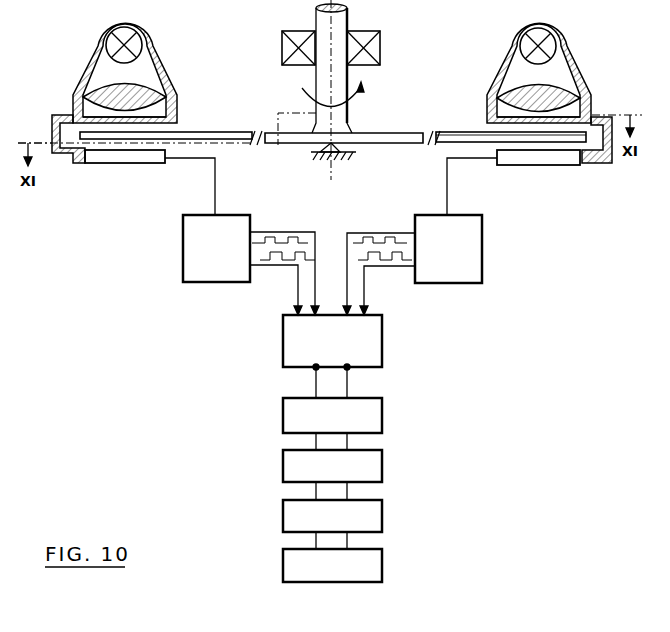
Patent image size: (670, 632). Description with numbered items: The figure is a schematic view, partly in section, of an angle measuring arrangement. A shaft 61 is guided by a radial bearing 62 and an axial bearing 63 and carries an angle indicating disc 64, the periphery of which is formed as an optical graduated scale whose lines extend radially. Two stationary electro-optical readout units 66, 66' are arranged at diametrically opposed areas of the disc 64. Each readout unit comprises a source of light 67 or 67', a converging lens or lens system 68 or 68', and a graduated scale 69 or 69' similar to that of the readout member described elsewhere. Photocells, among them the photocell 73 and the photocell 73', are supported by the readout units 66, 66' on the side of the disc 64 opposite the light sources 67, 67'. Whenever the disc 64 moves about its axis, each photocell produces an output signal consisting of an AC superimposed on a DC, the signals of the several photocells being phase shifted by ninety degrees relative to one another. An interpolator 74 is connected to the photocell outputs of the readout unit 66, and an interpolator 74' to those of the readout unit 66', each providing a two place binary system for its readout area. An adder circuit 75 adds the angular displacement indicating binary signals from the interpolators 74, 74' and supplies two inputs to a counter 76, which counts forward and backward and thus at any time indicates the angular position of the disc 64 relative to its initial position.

The shaft 61 is at (338, 20).
The radial bearing 62 is at (379, 55).
The axial bearing 63 is at (343, 165).
The angle indicating disc 64 is at (400, 132).
The electro-optical readout unit 66 is at (553, 93).
The electro-optical readout unit 66' is at (126, 93).
The source of light 67 is at (517, 46).
The source of light 67' is at (101, 45).
The converging lens 68 is at (520, 93).
The converging lens 68' is at (149, 92).
The graduated scale 69 is at (520, 118).
The graduated scale 69' is at (150, 120).
The photocell 73 is at (513, 182).
The photocell 73' is at (150, 182).
The interpolator 74 is at (412, 265).
The interpolator 74' is at (251, 265).
The adder circuit 75 is at (380, 350).
The counter 76 is at (395, 400).